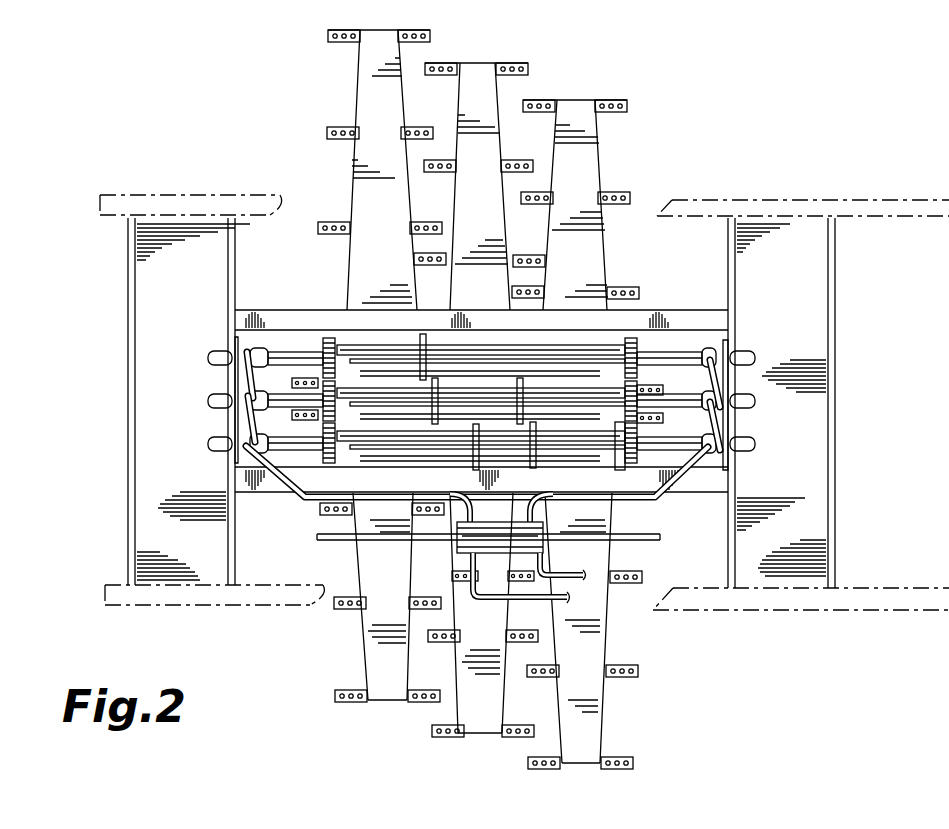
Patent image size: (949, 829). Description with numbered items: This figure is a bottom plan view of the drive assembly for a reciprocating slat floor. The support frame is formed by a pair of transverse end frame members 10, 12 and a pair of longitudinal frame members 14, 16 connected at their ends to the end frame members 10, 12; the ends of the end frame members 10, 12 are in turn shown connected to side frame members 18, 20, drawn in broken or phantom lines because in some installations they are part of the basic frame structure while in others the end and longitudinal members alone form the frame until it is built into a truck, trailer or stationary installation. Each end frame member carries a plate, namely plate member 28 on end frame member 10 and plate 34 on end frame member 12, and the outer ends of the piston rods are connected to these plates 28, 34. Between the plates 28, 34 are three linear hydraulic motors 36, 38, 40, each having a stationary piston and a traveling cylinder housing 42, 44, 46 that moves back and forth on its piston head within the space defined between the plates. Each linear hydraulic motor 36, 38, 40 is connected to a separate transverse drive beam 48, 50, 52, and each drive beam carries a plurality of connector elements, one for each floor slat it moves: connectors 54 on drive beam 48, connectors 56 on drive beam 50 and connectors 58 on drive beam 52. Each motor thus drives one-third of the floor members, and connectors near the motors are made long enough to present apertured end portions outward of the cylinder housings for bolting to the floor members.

The transverse end frame member 10 is at (142, 498).
The transverse end frame member 12 is at (822, 476).
The longitudinal frame member 14 is at (697, 490).
The longitudinal frame member 16 is at (683, 319).
The side frame member 18 is at (778, 606).
The side frame member 20 is at (788, 206).
The plate member 28 is at (227, 518).
The plate 34 is at (735, 541).
The linear hydraulic motor 36 is at (288, 461).
The linear hydraulic motor 38 is at (267, 410).
The linear hydraulic motor 40 is at (278, 343).
The cylinder housing 42 is at (382, 448).
The cylinder housing 44 is at (338, 392).
The cylinder housing 46 is at (393, 312).
The transverse drive beam 48 is at (571, 688).
The transverse drive beam 50 is at (469, 653).
The transverse drive beam 52 is at (375, 635).
The connector 54 is at (620, 673).
The connector 56 is at (449, 734).
The connector 58 is at (341, 704).